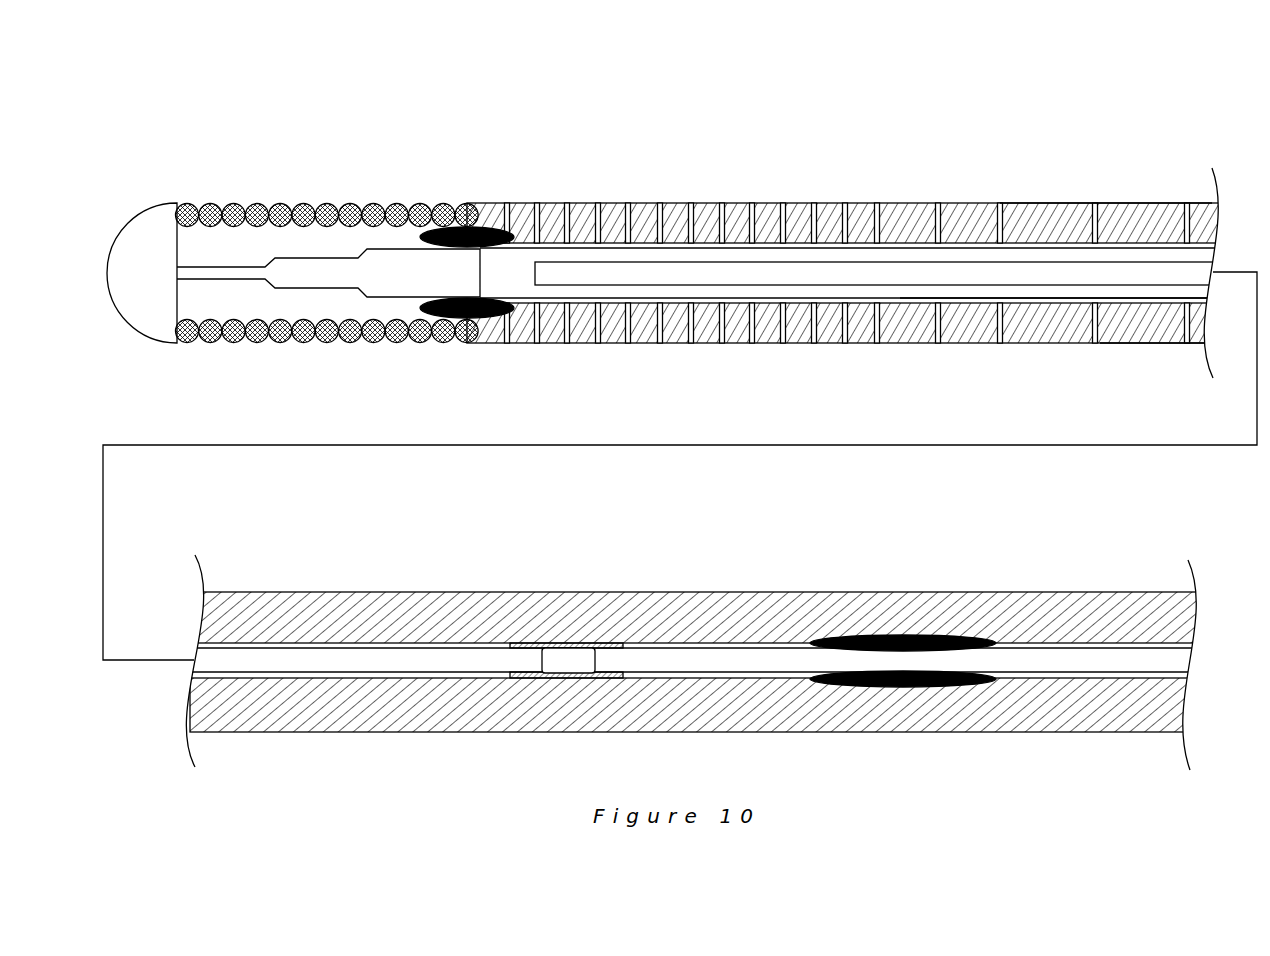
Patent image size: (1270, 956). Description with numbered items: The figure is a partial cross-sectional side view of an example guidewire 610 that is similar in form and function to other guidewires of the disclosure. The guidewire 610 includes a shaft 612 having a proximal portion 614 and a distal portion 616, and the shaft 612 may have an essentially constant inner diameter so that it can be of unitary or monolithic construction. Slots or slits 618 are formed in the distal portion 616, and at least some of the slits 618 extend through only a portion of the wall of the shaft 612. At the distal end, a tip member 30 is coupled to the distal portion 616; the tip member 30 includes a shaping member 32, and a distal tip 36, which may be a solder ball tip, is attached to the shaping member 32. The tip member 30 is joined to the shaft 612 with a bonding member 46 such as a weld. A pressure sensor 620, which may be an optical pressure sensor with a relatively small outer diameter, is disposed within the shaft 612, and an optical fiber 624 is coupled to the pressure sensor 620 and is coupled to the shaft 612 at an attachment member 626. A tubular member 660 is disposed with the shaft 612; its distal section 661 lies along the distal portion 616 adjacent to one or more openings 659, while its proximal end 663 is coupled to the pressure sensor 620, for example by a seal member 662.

The guidewire 610 is at (848, 100).
The tip member 30 is at (250, 196).
The distal tip 36 is at (156, 217).
The shaping member 32 is at (309, 277).
The bonding member 46 is at (489, 208).
The openings 659 is at (567, 206).
The slots or slits 618 is at (782, 205).
The tubular member 660 is at (890, 260).
The distal portion 616 is at (1040, 205).
The shaft 612 is at (1134, 200).
The distal section 661 is at (1053, 276).
The proximal portion 614 is at (722, 598).
The optical fiber 624 is at (668, 662).
The proximal end 663 is at (537, 662).
The seal member 662 is at (540, 674).
The pressure sensor 620 is at (571, 667).
The attachment member 626 is at (930, 682).